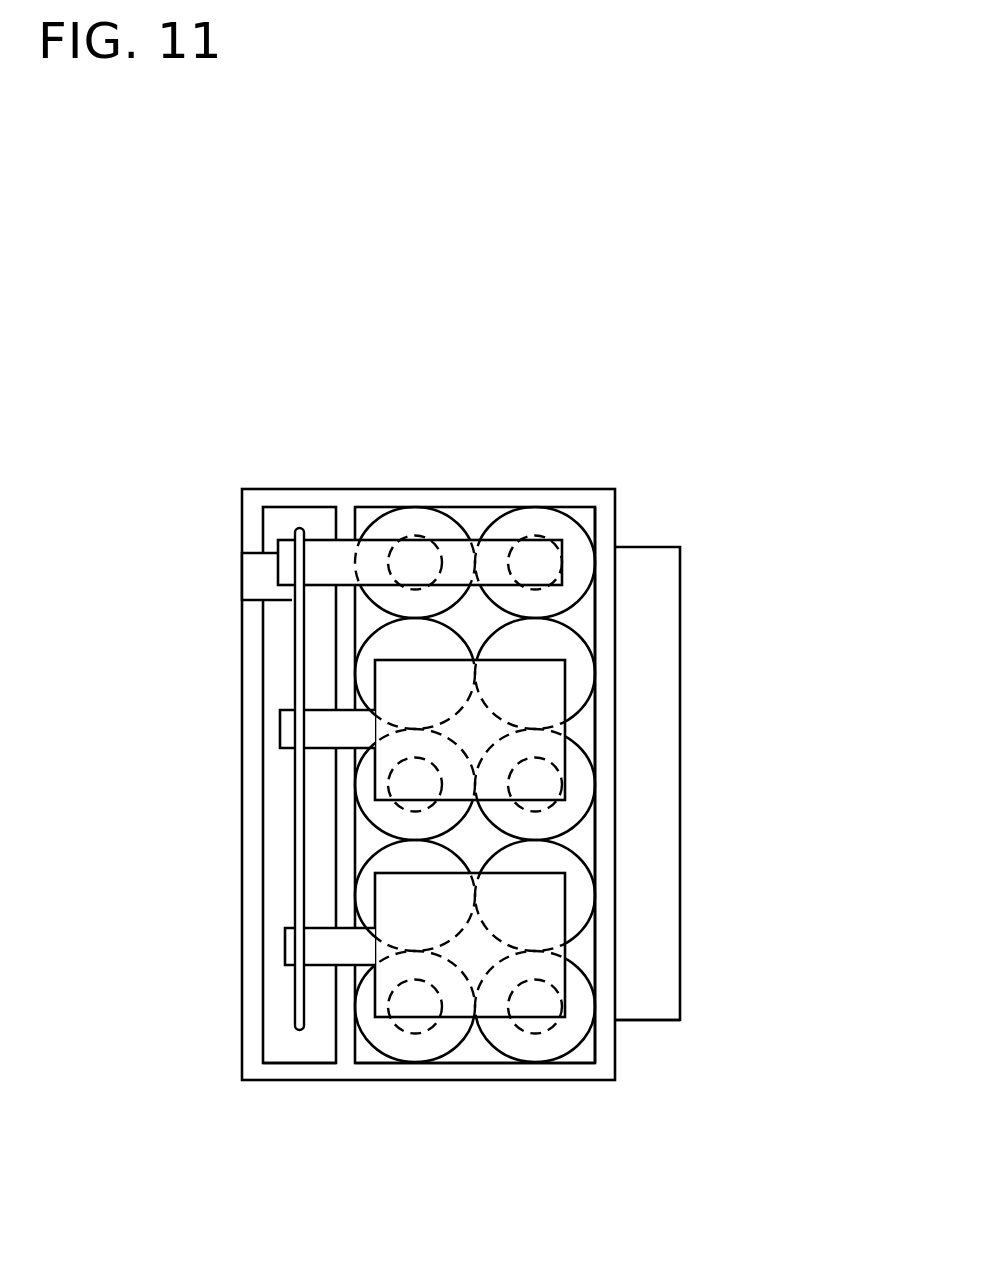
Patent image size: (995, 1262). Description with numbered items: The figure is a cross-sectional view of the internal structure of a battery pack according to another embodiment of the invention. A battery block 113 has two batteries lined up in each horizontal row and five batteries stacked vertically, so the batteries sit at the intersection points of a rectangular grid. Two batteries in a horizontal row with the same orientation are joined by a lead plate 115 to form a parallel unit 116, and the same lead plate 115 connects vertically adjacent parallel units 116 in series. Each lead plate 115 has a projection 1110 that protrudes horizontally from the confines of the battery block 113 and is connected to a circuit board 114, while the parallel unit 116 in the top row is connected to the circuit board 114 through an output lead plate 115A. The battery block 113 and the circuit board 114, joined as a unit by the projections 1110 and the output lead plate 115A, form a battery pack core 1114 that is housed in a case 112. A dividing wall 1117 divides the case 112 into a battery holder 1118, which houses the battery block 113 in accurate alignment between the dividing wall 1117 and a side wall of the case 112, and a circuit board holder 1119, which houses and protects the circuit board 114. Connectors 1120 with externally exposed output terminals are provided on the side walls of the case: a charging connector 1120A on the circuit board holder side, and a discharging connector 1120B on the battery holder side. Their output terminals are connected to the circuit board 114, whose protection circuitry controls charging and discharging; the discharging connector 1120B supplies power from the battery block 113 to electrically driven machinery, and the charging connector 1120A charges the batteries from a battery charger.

The case 112 is at (418, 505).
The battery block 113 is at (777, 905).
The circuit board 114 is at (293, 827).
The lead plate 115 is at (510, 680).
The output lead plate 115A is at (315, 560).
The parallel unit 116 is at (599, 527).
The projection 1110 is at (323, 722).
The battery pack core 1114 is at (268, 508).
The dividing wall 1117 is at (340, 863).
The battery holder 1118 is at (486, 1060).
The circuit board holder 1119 is at (310, 1057).
The connector 1120 is at (693, 1066).
The charging connector 1120A is at (250, 607).
The discharging connector 1120B is at (657, 1021).